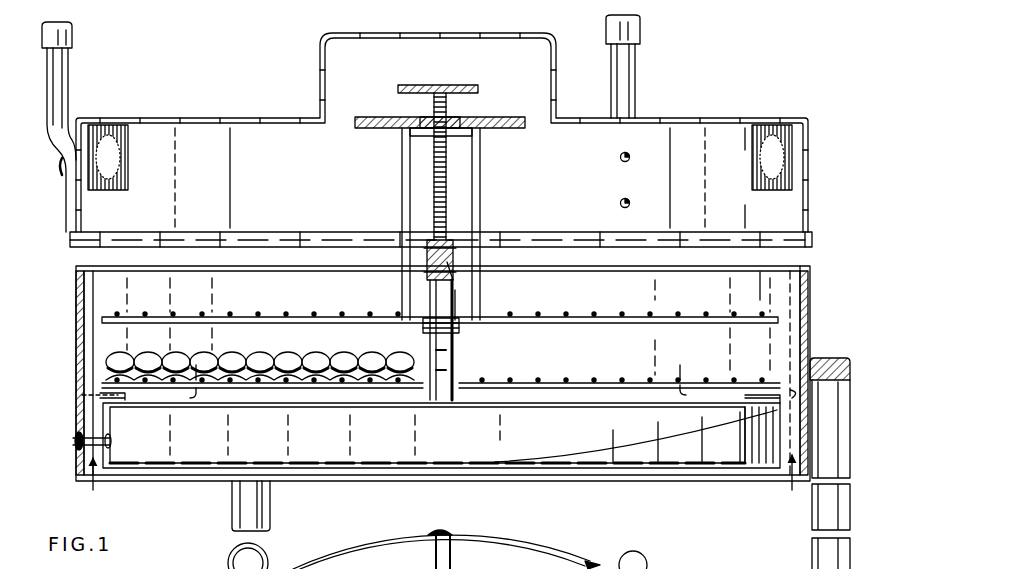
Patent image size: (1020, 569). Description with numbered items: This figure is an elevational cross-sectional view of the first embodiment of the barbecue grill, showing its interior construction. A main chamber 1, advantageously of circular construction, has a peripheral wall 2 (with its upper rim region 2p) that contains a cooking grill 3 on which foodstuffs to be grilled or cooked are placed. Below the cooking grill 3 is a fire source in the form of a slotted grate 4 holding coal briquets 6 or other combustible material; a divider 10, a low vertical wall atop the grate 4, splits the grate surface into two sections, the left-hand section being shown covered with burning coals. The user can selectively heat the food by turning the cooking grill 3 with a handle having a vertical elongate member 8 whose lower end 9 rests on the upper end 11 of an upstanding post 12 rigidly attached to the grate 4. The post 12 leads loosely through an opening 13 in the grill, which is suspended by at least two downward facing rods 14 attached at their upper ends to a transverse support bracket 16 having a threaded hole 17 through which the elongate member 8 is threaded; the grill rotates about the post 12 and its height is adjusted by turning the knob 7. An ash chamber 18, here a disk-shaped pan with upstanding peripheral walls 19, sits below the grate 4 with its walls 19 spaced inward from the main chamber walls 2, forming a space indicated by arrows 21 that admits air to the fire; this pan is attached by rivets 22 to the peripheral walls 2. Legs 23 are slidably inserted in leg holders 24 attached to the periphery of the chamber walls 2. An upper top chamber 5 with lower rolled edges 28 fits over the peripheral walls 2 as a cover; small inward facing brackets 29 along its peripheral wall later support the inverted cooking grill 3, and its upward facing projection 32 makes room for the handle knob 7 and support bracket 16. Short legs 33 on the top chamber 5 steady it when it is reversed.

The main chamber 1 is at (766, 272).
The peripheral wall 2 is at (809, 303).
The housing rim 2p is at (808, 264).
The cooking grill 3 is at (664, 323).
The slotted grate 4 is at (572, 381).
The upper top chamber 5 is at (262, 112).
The coal briquets 6 is at (258, 352).
The knob 7 is at (452, 85).
The vertical elongate member 8 is at (434, 168).
The lower end 9 is at (450, 262).
The divider 10 is at (455, 362).
The upper end 11 is at (426, 246).
The upstanding post 12 is at (457, 310).
The opening 13 is at (424, 328).
The downward facing rods 14 is at (402, 172).
The transverse support bracket 16 is at (380, 117).
The threaded hole 17 is at (455, 124).
The ash chamber 18 is at (695, 469).
The upstanding peripheral walls 19 is at (117, 412).
The arrows 21 is at (95, 490).
The rivets 22 is at (76, 442).
The legs 23 is at (270, 508).
The leg holders 24 is at (848, 368).
The lower rolled edges 28 is at (810, 233).
The inward facing brackets 29 is at (128, 170).
The upward facing projection 32 is at (410, 36).
The short legs 33 is at (72, 82).